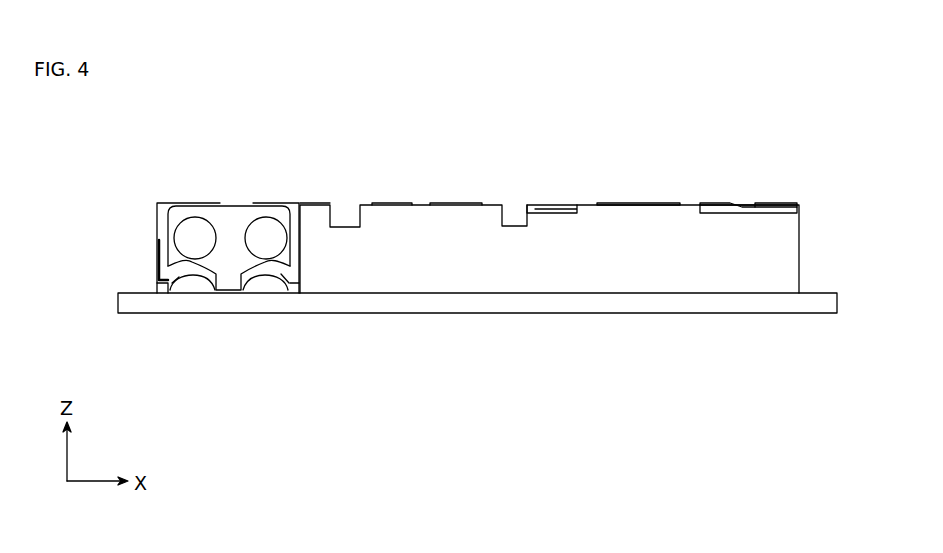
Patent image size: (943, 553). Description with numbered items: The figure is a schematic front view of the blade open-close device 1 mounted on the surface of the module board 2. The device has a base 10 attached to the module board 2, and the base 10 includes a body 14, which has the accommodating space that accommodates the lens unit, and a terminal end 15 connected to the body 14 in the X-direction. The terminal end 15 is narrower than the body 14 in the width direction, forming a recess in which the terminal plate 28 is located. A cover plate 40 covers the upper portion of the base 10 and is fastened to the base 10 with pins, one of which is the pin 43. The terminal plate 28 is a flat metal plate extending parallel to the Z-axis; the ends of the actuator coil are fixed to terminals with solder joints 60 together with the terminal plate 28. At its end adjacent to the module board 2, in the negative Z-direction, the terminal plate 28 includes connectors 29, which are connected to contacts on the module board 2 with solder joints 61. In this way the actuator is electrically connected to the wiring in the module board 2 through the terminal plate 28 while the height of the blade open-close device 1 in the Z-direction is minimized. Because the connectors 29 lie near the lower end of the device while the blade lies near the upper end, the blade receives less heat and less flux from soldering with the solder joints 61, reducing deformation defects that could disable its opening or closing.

The blade open-close device 1 is at (798, 86).
The module board 2 is at (818, 305).
The base 10 is at (576, 275).
The body 14 is at (650, 218).
The terminal end 15 is at (156, 259).
The terminal plate 28 is at (232, 208).
The connectors 29 is at (167, 284).
The cover plate 40 is at (716, 204).
The pin 43 is at (766, 204).
The solder joints 60 is at (190, 224).
The solder joints 61 is at (192, 286).